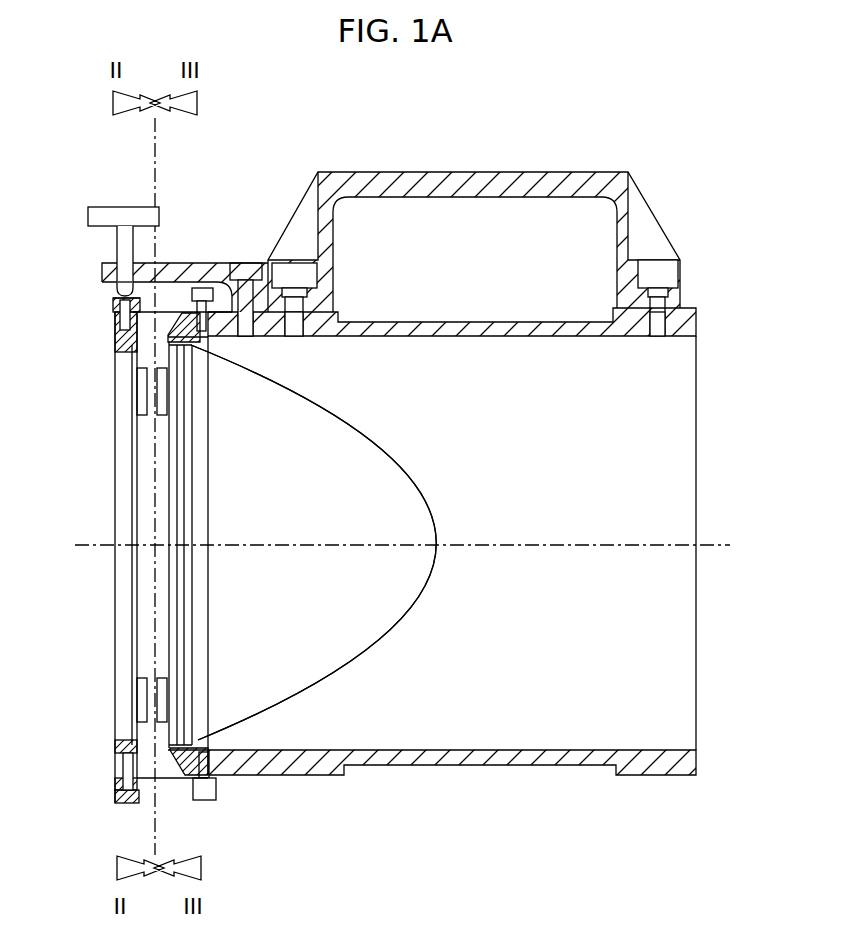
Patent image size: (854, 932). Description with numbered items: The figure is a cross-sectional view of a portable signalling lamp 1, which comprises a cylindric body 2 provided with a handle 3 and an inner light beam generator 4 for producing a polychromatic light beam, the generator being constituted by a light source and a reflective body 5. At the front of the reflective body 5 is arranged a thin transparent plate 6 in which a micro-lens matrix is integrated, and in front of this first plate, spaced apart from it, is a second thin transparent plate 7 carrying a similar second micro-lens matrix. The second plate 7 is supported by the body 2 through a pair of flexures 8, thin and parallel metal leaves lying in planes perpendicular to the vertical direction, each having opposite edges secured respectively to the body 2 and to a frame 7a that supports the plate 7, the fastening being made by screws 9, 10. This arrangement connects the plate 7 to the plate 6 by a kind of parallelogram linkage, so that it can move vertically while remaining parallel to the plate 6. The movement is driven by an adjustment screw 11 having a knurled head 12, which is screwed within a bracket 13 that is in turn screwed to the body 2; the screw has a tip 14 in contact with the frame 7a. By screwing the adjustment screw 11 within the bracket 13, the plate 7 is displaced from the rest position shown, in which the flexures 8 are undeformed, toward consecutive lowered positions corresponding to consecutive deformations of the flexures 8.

The portable lamp 1 is at (463, 445).
The cylindric body 2 is at (456, 321).
The handle 3 is at (483, 172).
The inner light beam generator 4 is at (378, 468).
The reflective body 5 is at (431, 511).
The thin transparent plate 6 is at (182, 584).
The second thin transparent plate 7 is at (104, 557).
The frame 7a is at (118, 755).
The flexures 8 is at (172, 306).
The screw 9 is at (204, 289).
The screw 10 is at (112, 314).
The adjustment screw 11 is at (124, 262).
The knurled head 12 is at (108, 214).
The bracket 13 is at (176, 263).
The tip 14 is at (112, 298).